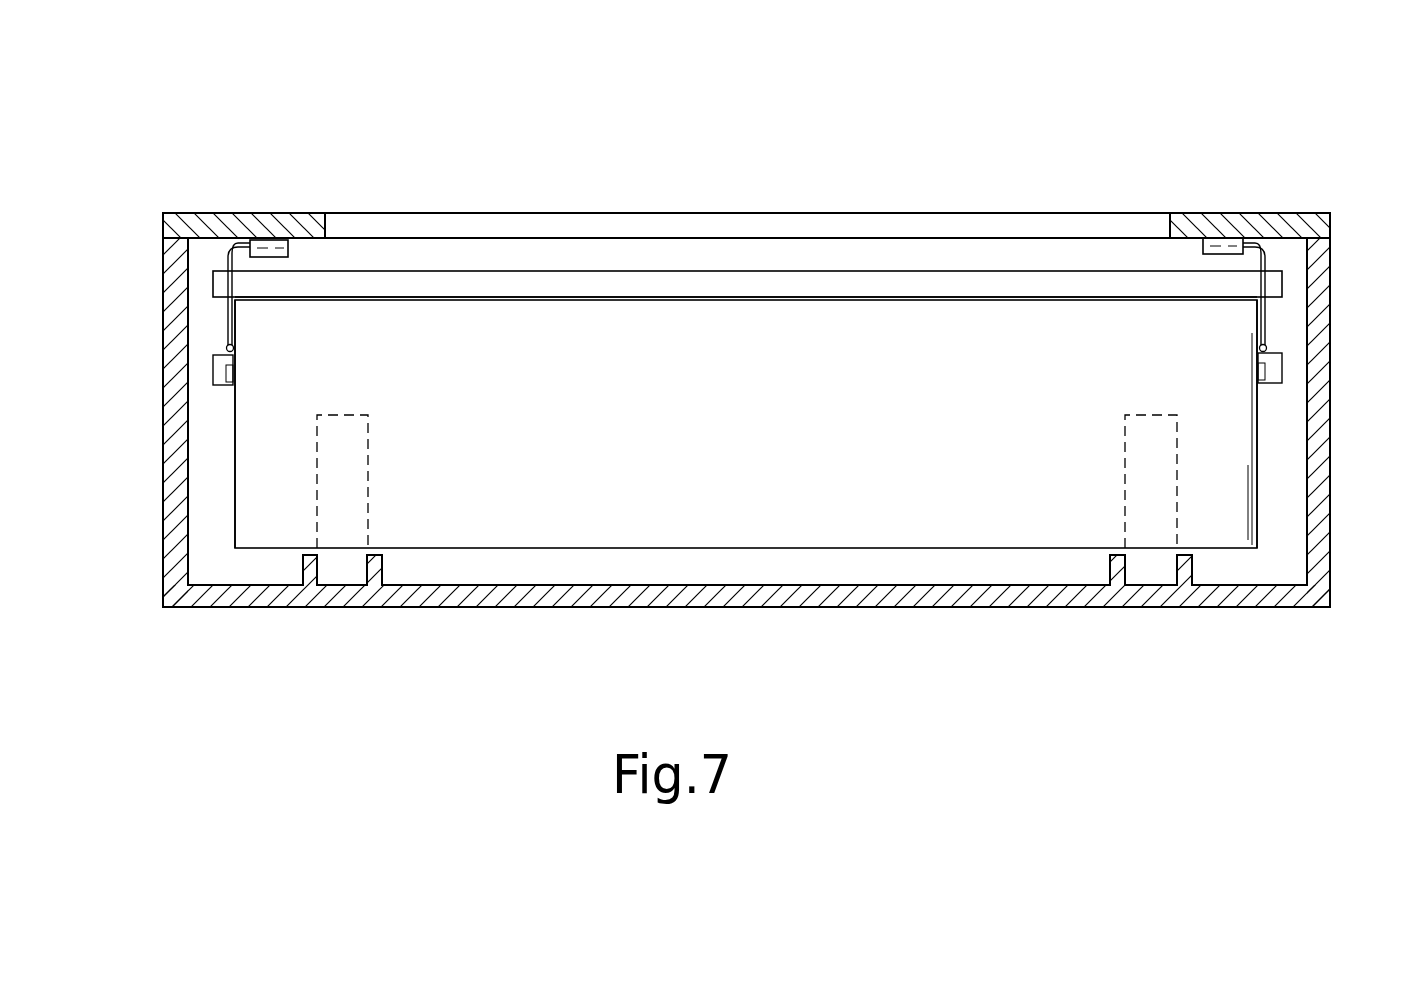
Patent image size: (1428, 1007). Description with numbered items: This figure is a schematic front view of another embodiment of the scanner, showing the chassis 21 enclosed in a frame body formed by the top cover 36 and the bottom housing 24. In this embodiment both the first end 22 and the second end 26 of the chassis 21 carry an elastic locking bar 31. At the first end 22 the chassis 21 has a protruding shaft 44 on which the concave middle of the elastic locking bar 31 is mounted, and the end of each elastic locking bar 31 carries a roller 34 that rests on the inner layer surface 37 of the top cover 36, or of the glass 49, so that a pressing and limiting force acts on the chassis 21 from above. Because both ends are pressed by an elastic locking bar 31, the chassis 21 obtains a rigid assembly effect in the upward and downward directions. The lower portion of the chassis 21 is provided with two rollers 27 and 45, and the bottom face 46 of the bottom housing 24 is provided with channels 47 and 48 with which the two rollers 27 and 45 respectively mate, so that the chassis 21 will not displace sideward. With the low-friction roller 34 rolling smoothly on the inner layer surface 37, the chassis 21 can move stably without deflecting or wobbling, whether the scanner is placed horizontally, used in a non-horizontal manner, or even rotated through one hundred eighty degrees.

The chassis 21 is at (835, 530).
The first end 22 is at (235, 470).
The bottom housing 24 is at (1330, 522).
The second end 26 is at (1258, 440).
The roller 27 is at (1140, 562).
The elastic locking bar 31 is at (230, 322).
The roller 34 is at (268, 242).
The top cover 36 is at (1196, 222).
The inner layer surface 37 is at (198, 240).
The protruding shaft 44 is at (215, 374).
The roller 45 is at (335, 565).
The bottom face 46 is at (578, 582).
The channel 47 is at (1167, 585).
The channel 48 is at (350, 568).
The glass 49 is at (742, 228).